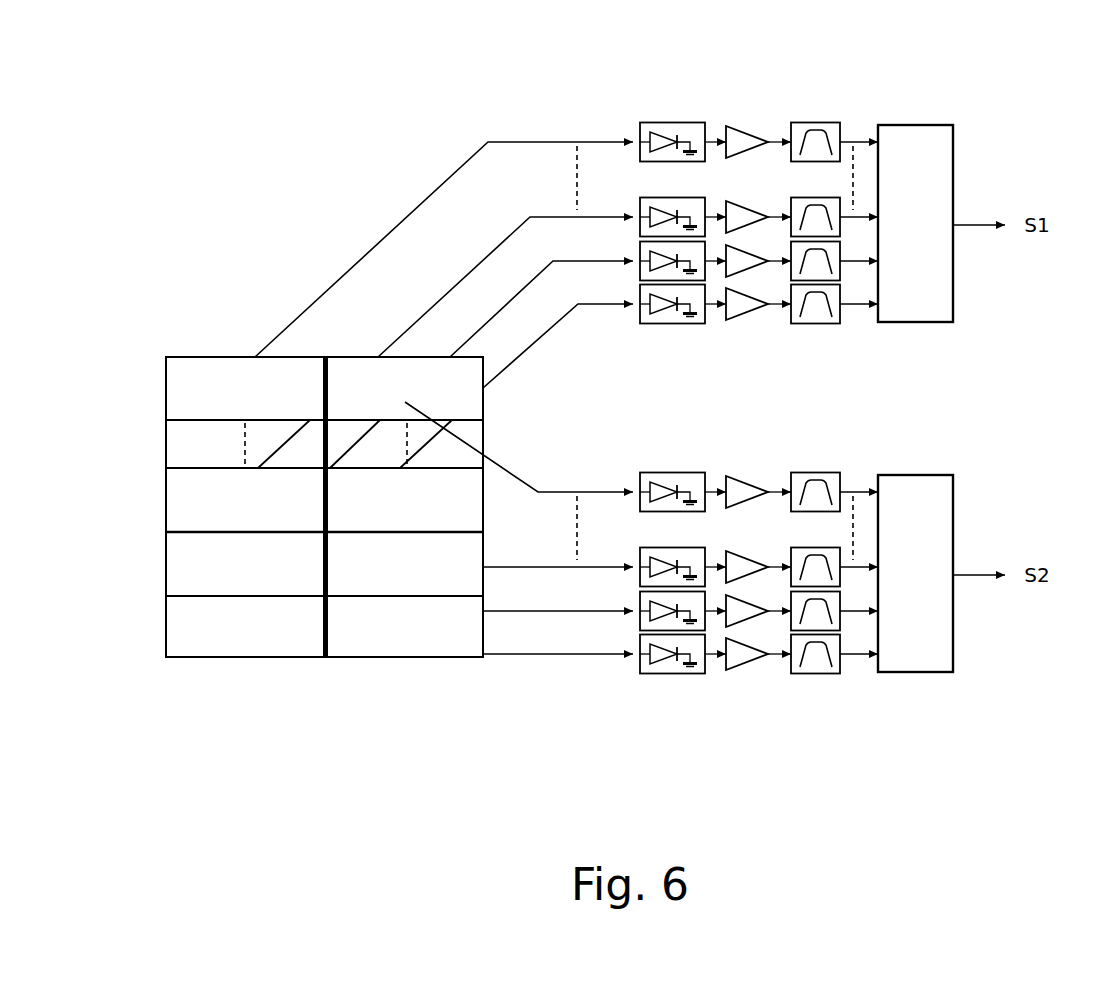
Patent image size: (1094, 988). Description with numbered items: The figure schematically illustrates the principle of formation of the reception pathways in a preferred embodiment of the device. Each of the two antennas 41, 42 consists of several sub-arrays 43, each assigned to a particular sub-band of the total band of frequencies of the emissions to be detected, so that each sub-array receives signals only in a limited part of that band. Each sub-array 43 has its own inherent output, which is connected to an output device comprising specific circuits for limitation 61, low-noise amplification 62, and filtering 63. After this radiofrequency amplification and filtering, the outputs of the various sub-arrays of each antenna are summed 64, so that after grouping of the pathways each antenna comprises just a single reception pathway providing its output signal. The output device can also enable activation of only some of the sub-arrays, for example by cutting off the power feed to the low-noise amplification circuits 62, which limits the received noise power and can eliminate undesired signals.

The antenna 41 is at (278, 507).
The antenna 42 is at (460, 488).
The sub-array 43 is at (331, 501).
The limitation circuit 61 is at (672, 350).
The low-noise amplification circuit 62 is at (758, 358).
The filtering circuit 63 is at (831, 349).
The summation 64 is at (980, 398).